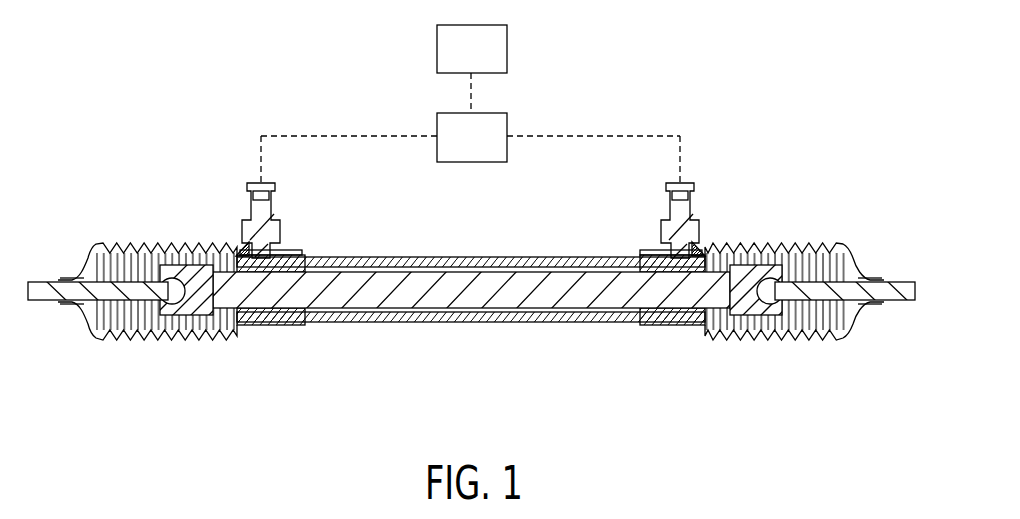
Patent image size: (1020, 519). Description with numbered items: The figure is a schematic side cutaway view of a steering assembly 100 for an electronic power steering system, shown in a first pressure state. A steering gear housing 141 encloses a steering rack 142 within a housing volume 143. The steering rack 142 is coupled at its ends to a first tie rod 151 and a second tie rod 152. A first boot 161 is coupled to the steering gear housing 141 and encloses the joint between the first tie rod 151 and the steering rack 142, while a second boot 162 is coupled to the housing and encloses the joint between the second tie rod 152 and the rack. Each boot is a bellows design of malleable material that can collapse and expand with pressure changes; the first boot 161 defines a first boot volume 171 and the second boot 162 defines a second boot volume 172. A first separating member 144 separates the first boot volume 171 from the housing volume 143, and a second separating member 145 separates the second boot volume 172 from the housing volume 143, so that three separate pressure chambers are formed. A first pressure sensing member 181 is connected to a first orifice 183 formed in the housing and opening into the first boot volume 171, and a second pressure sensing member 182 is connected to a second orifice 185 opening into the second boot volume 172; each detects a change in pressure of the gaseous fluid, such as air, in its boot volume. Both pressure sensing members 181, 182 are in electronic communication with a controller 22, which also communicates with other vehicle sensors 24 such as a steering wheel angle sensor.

The steering assembly 100 is at (132, 81).
The controller 22 is at (481, 148).
The vehicle sensors 24 is at (481, 59).
The steering gear housing 141 is at (540, 322).
The steering rack 142 is at (448, 300).
The housing volume 143 is at (366, 322).
The first separating member 144 is at (262, 309).
The second separating member 145 is at (672, 310).
The first tie rod 151 is at (56, 291).
The second tie rod 152 is at (862, 300).
The first boot 161 is at (118, 336).
The second boot 162 is at (860, 258).
The first boot volume 171 is at (150, 324).
The second boot volume 172 is at (810, 324).
The first pressure sensing member 181 is at (278, 234).
The second pressure sensing member 182 is at (666, 229).
The first orifice 183 is at (241, 251).
The second orifice 185 is at (700, 251).